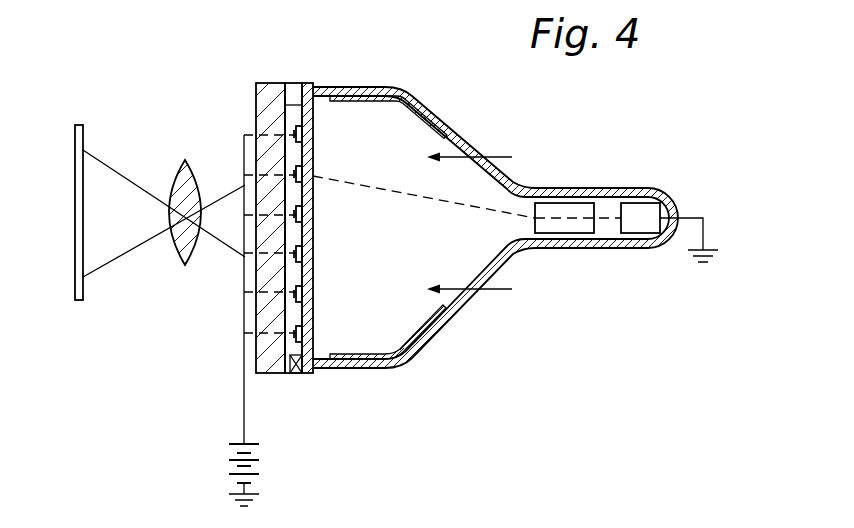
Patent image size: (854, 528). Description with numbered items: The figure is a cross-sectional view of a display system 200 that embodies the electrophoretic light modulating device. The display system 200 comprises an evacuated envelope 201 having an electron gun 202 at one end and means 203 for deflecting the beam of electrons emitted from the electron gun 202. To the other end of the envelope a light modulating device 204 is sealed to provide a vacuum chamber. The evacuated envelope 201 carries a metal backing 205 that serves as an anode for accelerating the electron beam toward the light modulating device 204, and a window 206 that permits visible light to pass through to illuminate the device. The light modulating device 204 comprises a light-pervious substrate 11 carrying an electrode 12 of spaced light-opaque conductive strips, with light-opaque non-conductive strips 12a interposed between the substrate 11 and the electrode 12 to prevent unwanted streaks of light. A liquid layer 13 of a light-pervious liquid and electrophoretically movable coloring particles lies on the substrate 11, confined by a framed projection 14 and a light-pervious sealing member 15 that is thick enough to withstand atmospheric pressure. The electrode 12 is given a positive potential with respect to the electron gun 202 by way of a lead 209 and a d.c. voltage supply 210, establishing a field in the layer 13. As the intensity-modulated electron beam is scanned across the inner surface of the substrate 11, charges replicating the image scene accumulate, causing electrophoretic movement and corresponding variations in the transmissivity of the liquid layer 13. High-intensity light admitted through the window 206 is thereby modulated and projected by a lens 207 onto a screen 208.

The light-pervious substrate 11 is at (314, 86).
The electrode 12 is at (296, 337).
The light-opaque non-conductive strips 12a is at (292, 361).
The liquid layer 13 is at (306, 92).
The framed projection 14 is at (296, 99).
The light-pervious sealing member 15 is at (267, 86).
The display system 200 is at (416, 46).
The evacuated envelope 201 is at (428, 101).
The electron gun 202 is at (642, 228).
The means for deflecting a beam of electrons 203 is at (572, 234).
The light modulating device 204 is at (253, 107).
The metal backing 205 is at (369, 355).
The window 206 is at (470, 147).
The lens 207 is at (183, 263).
The screen 208 is at (83, 300).
The lead 209 is at (244, 415).
The d.c. voltage supply 210 is at (232, 466).